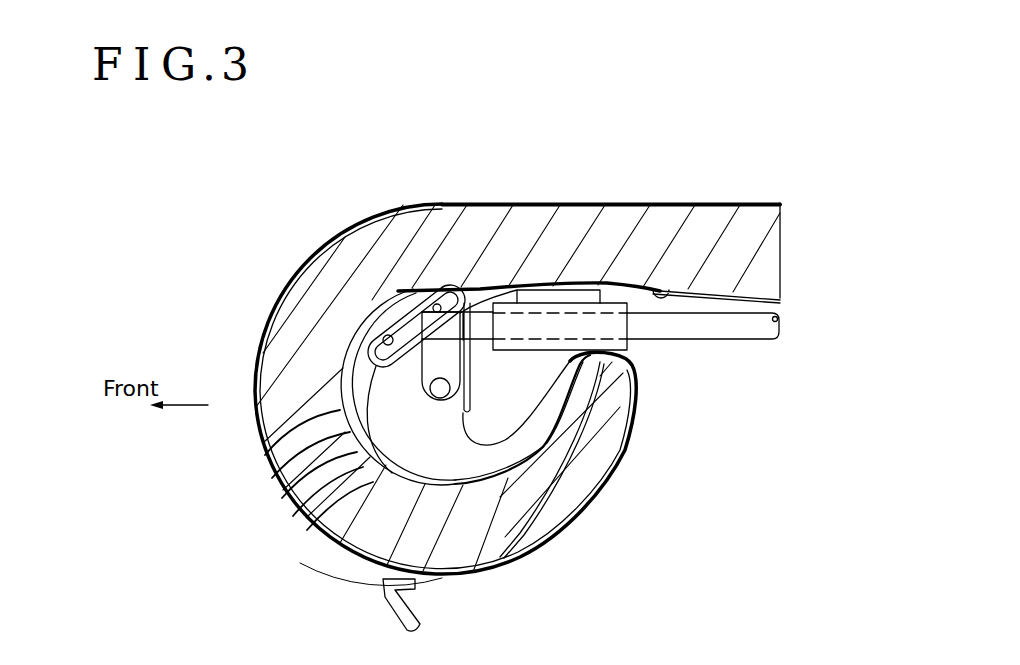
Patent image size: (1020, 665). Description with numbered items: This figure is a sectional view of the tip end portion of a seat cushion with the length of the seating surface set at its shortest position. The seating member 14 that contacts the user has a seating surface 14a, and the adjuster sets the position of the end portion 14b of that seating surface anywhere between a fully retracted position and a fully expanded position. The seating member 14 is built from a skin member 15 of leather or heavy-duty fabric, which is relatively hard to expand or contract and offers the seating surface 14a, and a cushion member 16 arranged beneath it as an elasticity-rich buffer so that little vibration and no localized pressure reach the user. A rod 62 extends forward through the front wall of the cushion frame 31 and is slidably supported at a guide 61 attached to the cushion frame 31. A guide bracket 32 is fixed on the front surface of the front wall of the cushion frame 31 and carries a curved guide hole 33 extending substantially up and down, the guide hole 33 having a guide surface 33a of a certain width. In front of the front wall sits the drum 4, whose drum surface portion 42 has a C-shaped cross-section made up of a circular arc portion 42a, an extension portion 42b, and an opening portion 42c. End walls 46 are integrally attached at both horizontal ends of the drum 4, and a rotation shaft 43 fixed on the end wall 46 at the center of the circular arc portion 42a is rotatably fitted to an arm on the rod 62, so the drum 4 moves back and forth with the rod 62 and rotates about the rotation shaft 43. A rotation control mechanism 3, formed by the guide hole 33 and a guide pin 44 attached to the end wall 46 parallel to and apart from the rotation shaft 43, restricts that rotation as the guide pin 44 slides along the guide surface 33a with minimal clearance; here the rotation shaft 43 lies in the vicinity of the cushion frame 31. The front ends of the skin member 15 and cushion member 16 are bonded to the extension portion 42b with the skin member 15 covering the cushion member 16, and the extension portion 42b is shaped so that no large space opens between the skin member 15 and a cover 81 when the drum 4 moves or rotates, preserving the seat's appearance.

The rotation control mechanism 3 is at (403, 240).
The drum 4 is at (333, 352).
The seating member 14 is at (627, 197).
The seating surface 14a is at (680, 207).
The end portion 14b is at (257, 362).
The skin member 15 is at (502, 213).
The cushion member 16 is at (430, 217).
The cushion frame 31 is at (666, 288).
The guide bracket 32 is at (437, 393).
The guide hole 33 is at (407, 327).
The guide surface 33a is at (387, 340).
The drum surface portion 42 is at (297, 483).
The circular arc portion 42a is at (270, 465).
The extension portion 42b is at (547, 447).
The opening portion 42c is at (530, 398).
The rotation shaft 43 is at (362, 533).
The guide pin 44 is at (497, 283).
The end wall 46 is at (342, 388).
The guide 61 is at (627, 350).
The rod 62 is at (680, 338).
The cover 81 is at (383, 609).